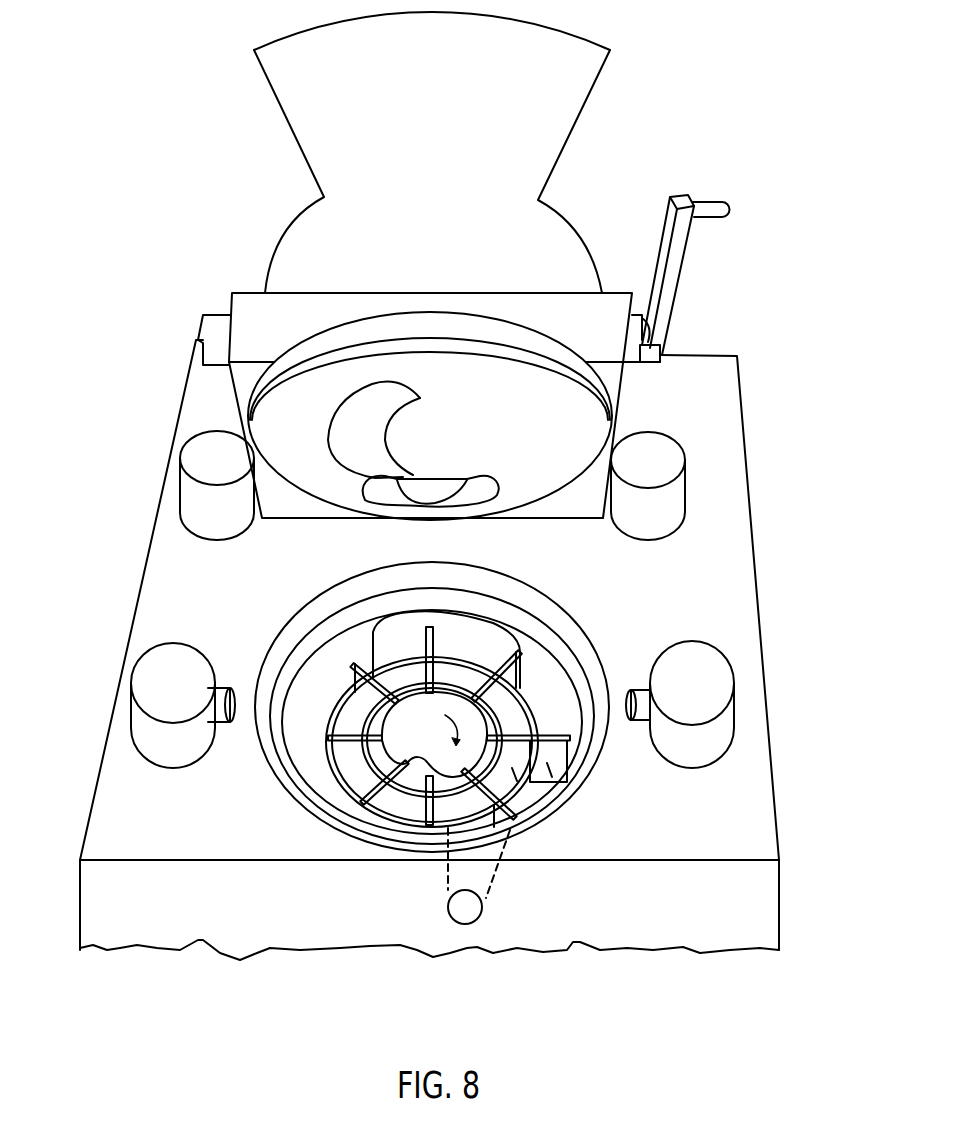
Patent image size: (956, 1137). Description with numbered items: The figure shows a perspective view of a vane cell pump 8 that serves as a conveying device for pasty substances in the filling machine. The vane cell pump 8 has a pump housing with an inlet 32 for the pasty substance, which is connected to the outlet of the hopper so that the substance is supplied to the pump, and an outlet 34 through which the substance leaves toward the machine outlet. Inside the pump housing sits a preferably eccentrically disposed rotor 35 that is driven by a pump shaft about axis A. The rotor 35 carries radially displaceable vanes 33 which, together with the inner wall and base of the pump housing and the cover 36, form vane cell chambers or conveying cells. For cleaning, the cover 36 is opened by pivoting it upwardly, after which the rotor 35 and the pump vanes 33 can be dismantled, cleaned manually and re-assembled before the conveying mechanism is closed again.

The vane cell pump 8 is at (770, 210).
The inlet 32 is at (483, 482).
The vanes 33 is at (547, 765).
The outlet 34 is at (468, 923).
The rotor 35 is at (513, 772).
The cover 36 is at (303, 427).